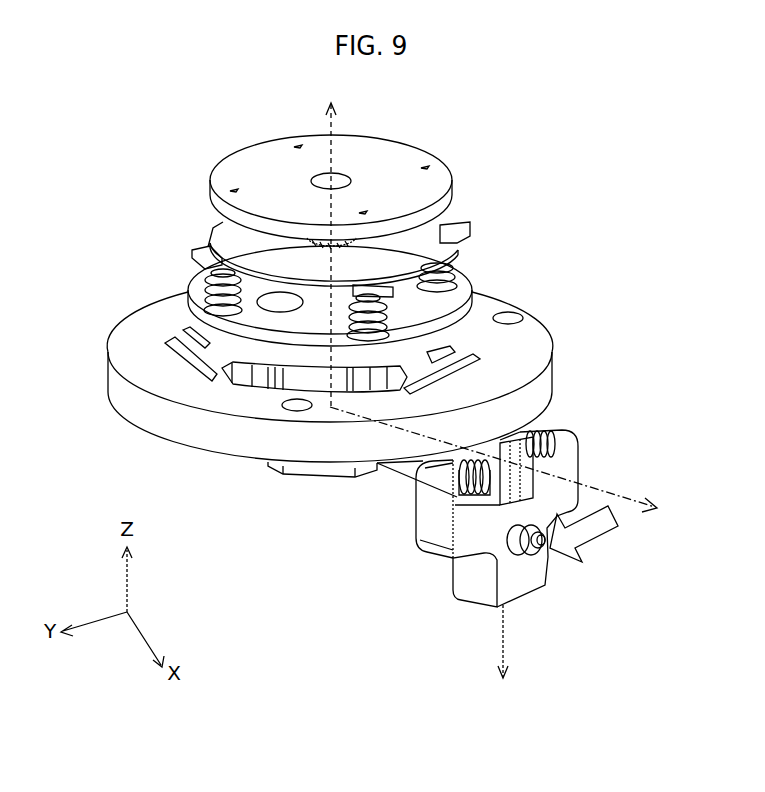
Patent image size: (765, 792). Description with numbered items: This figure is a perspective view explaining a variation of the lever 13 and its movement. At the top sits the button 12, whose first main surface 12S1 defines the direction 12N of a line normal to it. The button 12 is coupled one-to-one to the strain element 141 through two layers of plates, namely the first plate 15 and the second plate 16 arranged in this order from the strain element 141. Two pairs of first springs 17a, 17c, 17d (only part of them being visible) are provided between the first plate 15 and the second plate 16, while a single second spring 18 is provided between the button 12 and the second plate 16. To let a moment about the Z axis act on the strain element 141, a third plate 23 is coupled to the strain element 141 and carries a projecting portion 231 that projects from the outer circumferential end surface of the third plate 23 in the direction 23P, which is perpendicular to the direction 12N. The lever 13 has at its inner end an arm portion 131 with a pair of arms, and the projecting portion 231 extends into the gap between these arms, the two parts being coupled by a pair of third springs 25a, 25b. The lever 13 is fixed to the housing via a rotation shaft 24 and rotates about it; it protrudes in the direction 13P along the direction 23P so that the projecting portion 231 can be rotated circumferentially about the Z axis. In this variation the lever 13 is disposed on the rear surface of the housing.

The button 12 is at (331, 165).
The first main surface of the button 12S1 is at (397, 167).
The direction of a line normal to the first main surface of the button 12N is at (331, 242).
The second spring 18 is at (227, 223).
The second plate 16 is at (218, 242).
The first spring 17a is at (453, 258).
The first spring 17c is at (207, 277).
The first spring 17d is at (358, 316).
The first plate 15 is at (238, 348).
The strain element 141 is at (538, 327).
The third plate 23 is at (297, 470).
The direction of projection of the projecting portion 23P is at (517, 465).
The projecting portion 231 is at (533, 463).
The third spring 25a is at (480, 485).
The third spring 25b is at (547, 432).
The arm portion 131 is at (423, 505).
The lever 13 is at (502, 518).
The direction of protrusion of the lever 13P is at (503, 661).
The rotation shaft 24 is at (531, 548).